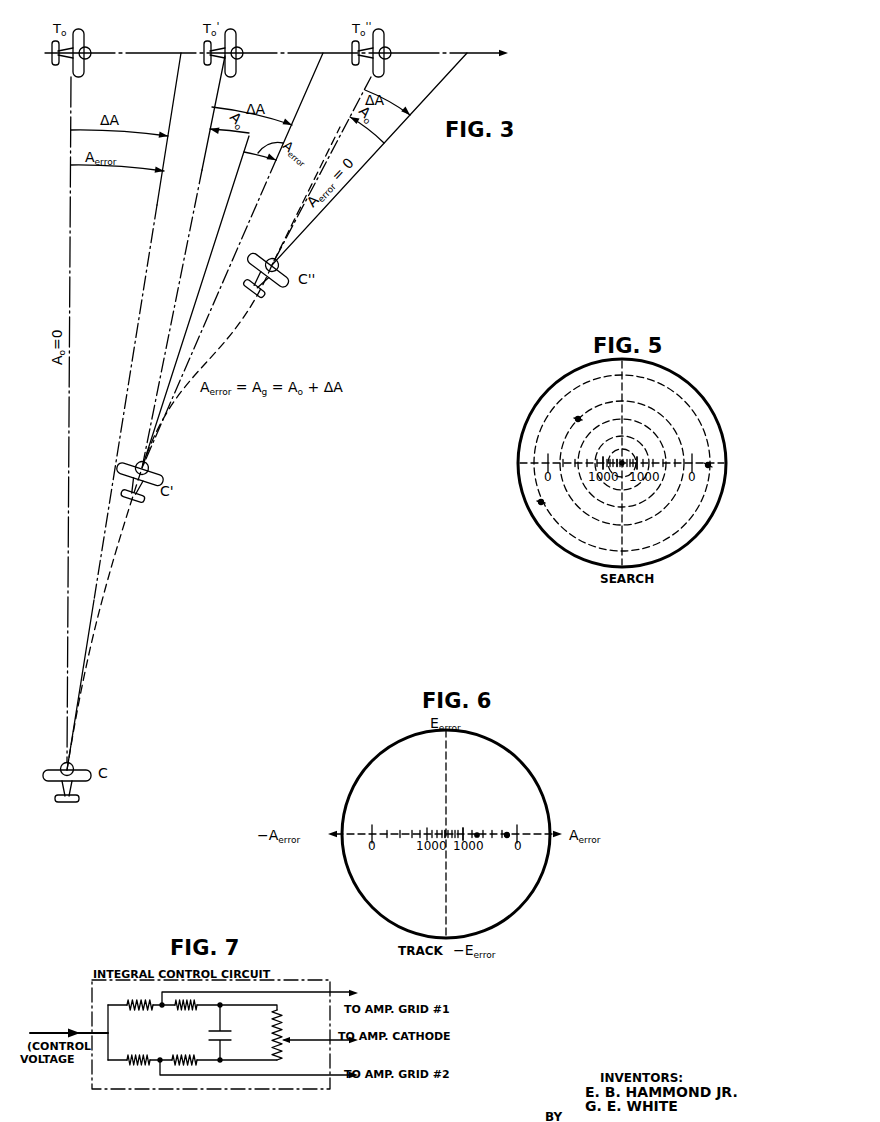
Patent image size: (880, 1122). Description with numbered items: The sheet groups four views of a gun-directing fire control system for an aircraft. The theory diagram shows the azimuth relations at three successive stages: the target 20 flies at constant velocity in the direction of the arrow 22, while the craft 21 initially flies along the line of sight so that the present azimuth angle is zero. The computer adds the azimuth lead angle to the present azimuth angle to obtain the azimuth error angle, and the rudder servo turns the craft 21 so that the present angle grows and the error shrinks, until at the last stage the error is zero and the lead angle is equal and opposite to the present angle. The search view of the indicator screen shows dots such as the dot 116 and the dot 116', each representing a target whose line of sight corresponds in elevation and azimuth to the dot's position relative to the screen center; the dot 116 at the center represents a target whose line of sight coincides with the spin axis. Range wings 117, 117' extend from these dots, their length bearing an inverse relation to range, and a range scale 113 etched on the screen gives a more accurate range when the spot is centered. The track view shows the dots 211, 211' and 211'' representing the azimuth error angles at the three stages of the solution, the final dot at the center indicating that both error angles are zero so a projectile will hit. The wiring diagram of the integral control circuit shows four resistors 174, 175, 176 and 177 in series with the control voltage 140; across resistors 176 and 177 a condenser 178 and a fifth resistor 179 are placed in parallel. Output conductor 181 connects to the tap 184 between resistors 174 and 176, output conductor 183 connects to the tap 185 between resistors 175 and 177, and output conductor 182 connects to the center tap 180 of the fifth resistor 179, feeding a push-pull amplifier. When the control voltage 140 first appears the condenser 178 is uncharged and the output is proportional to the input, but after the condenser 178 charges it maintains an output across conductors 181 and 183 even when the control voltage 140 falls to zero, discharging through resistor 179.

In FIG. 3, the target 20 is at (84, 44).
In FIG. 3, the craft 21 is at (71, 765).
In FIG. 3, the arrow 22 is at (508, 54).
In FIG. 5, the range scale 113 is at (651, 457).
In FIG. 6, the range scale 113 is at (461, 825).
In FIG. 5, the dot 116 is at (627, 447).
In FIG. 5, the dot 116' is at (648, 450).
In FIG. 5, the line (range wing) 117 is at (601, 454).
In FIG. 5, the line (range wing) 117' is at (628, 469).
In FIG. 6, the dot 211 is at (517, 853).
In FIG. 6, the dot 211' is at (478, 853).
In FIG. 6, the dot 211'' is at (428, 822).
In FIG. 7, the control voltage 140 is at (36, 1030).
In FIG. 7, the resistor 174 is at (140, 1009).
In FIG. 7, the resistor 175 is at (144, 1057).
In FIG. 7, the resistor 176 is at (193, 1009).
In FIG. 7, the resistor 177 is at (176, 1057).
In FIG. 7, the condenser 178 is at (226, 1038).
In FIG. 7, the fifth resistor 179 is at (284, 1016).
In FIG. 7, the center tap 180 is at (285, 1043).
In FIG. 7, the output conductor 181 is at (342, 998).
In FIG. 7, the output conductor 182 is at (341, 1040).
In FIG. 7, the output conductor 183 is at (348, 1077).
In FIG. 7, the tap 184 is at (162, 1004).
In FIG. 7, the tap 185 is at (160, 1061).